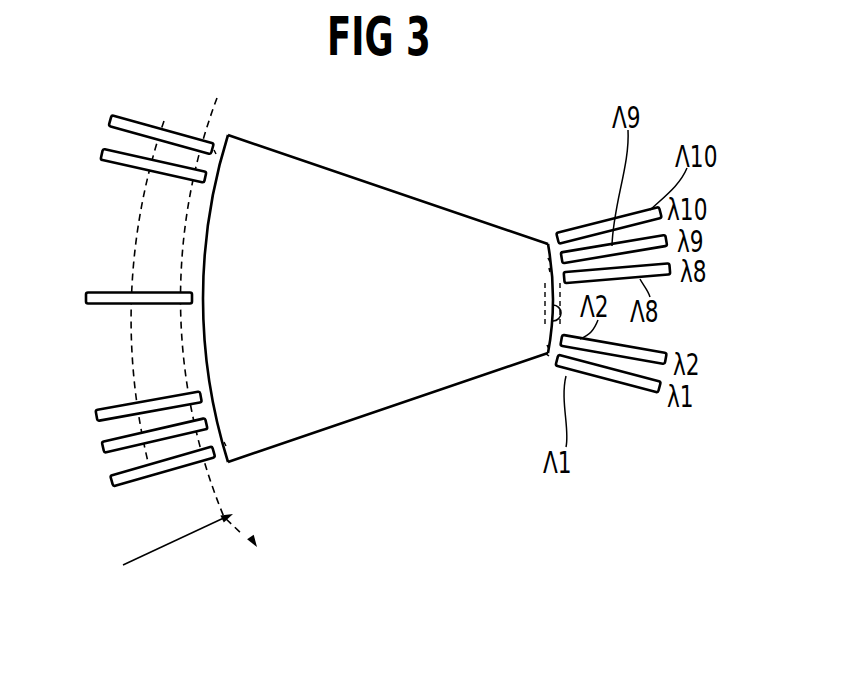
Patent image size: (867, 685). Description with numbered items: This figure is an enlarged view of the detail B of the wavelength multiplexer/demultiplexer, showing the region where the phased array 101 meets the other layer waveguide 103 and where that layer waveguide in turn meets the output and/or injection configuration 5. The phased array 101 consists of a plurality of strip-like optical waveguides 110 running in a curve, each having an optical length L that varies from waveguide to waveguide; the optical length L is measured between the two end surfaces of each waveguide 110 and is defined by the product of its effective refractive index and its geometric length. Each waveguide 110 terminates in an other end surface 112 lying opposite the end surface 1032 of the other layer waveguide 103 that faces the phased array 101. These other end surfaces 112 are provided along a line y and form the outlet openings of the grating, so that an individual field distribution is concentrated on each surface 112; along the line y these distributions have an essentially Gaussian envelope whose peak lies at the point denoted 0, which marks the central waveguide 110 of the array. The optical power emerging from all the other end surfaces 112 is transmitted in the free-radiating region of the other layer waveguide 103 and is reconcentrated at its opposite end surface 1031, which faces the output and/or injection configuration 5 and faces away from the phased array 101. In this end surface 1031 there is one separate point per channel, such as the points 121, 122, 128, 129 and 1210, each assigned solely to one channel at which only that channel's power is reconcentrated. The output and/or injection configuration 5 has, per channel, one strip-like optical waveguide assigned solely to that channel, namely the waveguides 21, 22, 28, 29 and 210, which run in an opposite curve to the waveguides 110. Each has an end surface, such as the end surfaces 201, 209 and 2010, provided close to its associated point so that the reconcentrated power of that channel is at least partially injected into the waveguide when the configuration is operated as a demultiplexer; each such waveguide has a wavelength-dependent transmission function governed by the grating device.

The other layer waveguide 103 is at (306, 321).
The end surface of the other layer waveguide 1031 is at (548, 325).
The end surface of the other layer waveguide facing the phased array 1032 is at (200, 280).
The strip-like optical waveguides 110 is at (159, 285).
The point marking the central waveguide 0 is at (196, 300).
The phased array 101 is at (200, 108).
The other end surface 112 is at (218, 153).
The end surface of waveguide 21 201 is at (548, 362).
The point for channel λ10 1210 is at (546, 246).
The point for channel λ9 129 is at (548, 260).
The point for channel λ8 128 is at (549, 270).
The point for channel λ2 122 is at (547, 347).
The point for channel λ1 121 is at (547, 357).
The end surface of waveguide 29 209 is at (549, 277).
The end surface of waveguide 210 2010 is at (552, 243).
The output and/or injection configuration 5 is at (642, 314).
The strip-like optical waveguide for channel λ10 210 is at (592, 234).
The strip-like optical waveguide for channel λ9 29 is at (630, 246).
The strip-like optical waveguide for channel λ8 28 is at (657, 278).
The strip-like optical waveguide for channel λ2 22 is at (588, 347).
The strip-like optical waveguide for channel λ1 21 is at (622, 380).
The detail B is at (477, 94).
The optical length L is at (167, 551).
The line y is at (259, 549).